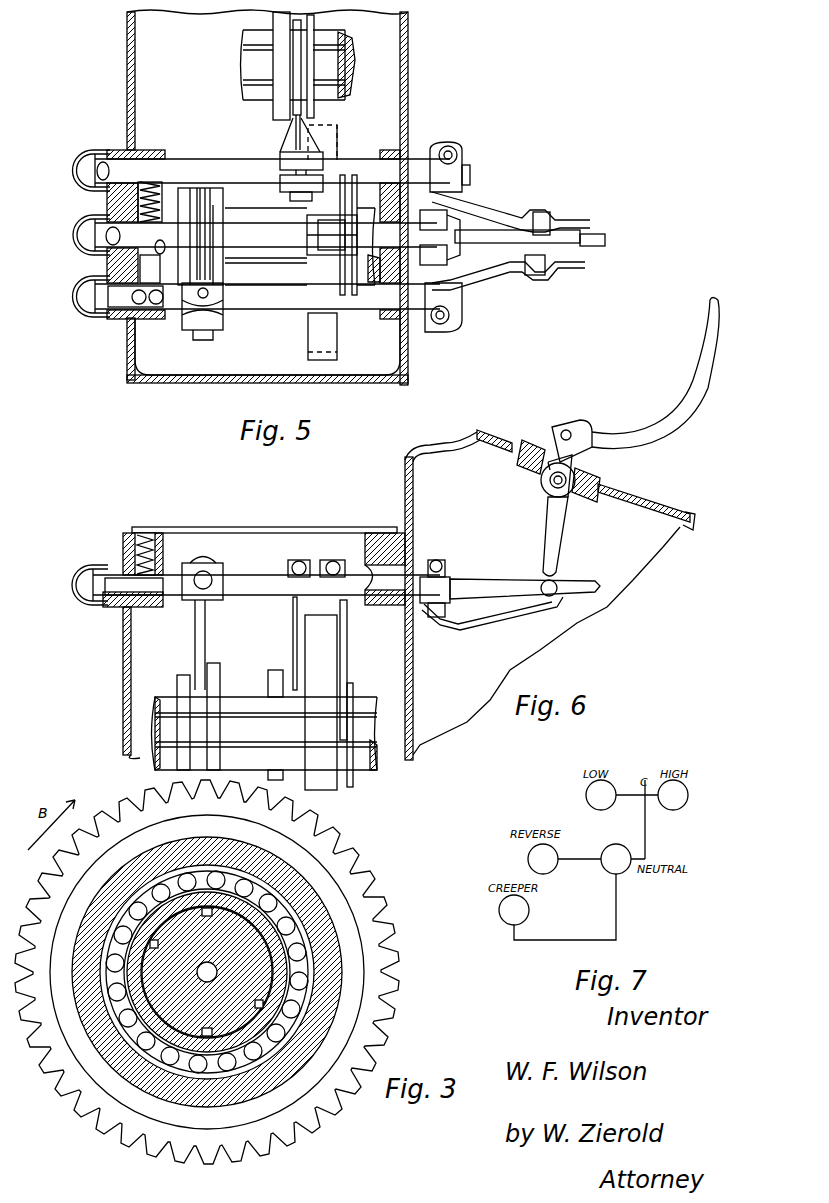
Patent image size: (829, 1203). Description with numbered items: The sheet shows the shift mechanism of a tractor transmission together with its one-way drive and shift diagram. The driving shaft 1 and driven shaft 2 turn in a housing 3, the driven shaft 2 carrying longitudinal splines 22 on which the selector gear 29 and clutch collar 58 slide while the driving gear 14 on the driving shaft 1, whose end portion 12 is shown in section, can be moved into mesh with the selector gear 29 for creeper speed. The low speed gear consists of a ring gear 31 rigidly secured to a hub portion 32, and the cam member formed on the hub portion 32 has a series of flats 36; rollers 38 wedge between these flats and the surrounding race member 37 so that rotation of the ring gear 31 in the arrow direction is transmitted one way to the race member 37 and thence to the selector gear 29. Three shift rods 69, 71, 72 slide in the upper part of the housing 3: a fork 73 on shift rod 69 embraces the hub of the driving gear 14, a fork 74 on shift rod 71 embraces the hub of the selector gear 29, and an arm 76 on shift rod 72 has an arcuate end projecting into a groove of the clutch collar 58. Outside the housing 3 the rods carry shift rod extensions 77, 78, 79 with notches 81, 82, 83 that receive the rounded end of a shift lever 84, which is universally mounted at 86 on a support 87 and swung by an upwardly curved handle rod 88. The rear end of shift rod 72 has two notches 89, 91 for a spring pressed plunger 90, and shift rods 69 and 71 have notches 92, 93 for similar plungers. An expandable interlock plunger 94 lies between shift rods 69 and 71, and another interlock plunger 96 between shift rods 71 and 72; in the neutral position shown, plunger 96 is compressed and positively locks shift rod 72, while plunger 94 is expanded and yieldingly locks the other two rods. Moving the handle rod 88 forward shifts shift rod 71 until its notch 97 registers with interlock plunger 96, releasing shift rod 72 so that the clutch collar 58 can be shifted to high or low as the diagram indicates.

In FIG. 5, the driving shaft 1 is at (242, 68).
In FIG. 5, the driven shaft 2 is at (236, 215).
In FIG. 6, the driven shaft 2 is at (165, 768).
In FIG. 6, the housing 3 is at (123, 688).
In FIG. 5, the shaft end 12 is at (325, 50).
In FIG. 5, the driving gear 14 is at (275, 110).
In FIG. 6, the driving gear 14 is at (275, 678).
In FIG. 6, the splines 22 is at (245, 713).
In FIG. 5, the selector gear 29 is at (336, 140).
In FIG. 6, the selector gear 29 is at (353, 690).
In FIG. 3, the ring gear 31 is at (345, 868).
In FIG. 3, the hub portion 32 is at (197, 918).
In FIG. 3, the flats 36 is at (168, 1050).
In FIG. 3, the race member 37 is at (95, 1047).
In FIG. 3, the rollers 38 is at (178, 1070).
In FIG. 5, the clutch collar 58 is at (192, 192).
In FIG. 6, the clutch collar 58 is at (222, 685).
In FIG. 5, the shift rod 69 is at (237, 163).
In FIG. 5, the shift rod 71 is at (266, 222).
In FIG. 5, the shift rod 72 is at (273, 305).
In FIG. 6, the shift rod 72 is at (255, 598).
In FIG. 5, the fork 73 is at (296, 145).
In FIG. 6, the fork 73 is at (293, 635).
In FIG. 5, the fork 74 is at (322, 218).
In FIG. 6, the fork 74 is at (347, 655).
In FIG. 5, the arm 76 is at (196, 330).
In FIG. 6, the arm 76 is at (197, 636).
In FIG. 5, the shift rod extension 77 is at (500, 215).
In FIG. 5, the shift rod extension 78 is at (480, 238).
In FIG. 6, the shift rod extension 78 is at (487, 617).
In FIG. 5, the shift rod extension 79 is at (497, 272).
In FIG. 6, the shift rod extension 79 is at (500, 580).
In FIG. 5, the notch 81 is at (546, 215).
In FIG. 5, the notch 82 is at (587, 243).
In FIG. 5, the notch 83 is at (535, 272).
In FIG. 6, the shift lever 84 is at (558, 537).
In FIG. 6, the universal mounting 86 is at (543, 486).
In FIG. 6, the support 87 is at (470, 452).
In FIG. 6, the handle rod 88 is at (700, 335).
In FIG. 5, the notch 89 is at (160, 312).
In FIG. 6, the notch 89 is at (145, 582).
In FIG. 6, the spring pressed plunger 90 is at (160, 565).
In FIG. 5, the notch 91 is at (135, 297).
In FIG. 6, the notch 91 is at (138, 586).
In FIG. 5, the notch 92 is at (103, 160).
In FIG. 5, the notch 93 is at (105, 240).
In FIG. 5, the interlock plunger 94 is at (125, 198).
In FIG. 5, the interlock plunger 96 is at (140, 265).
In FIG. 5, the notch 97 is at (165, 245).